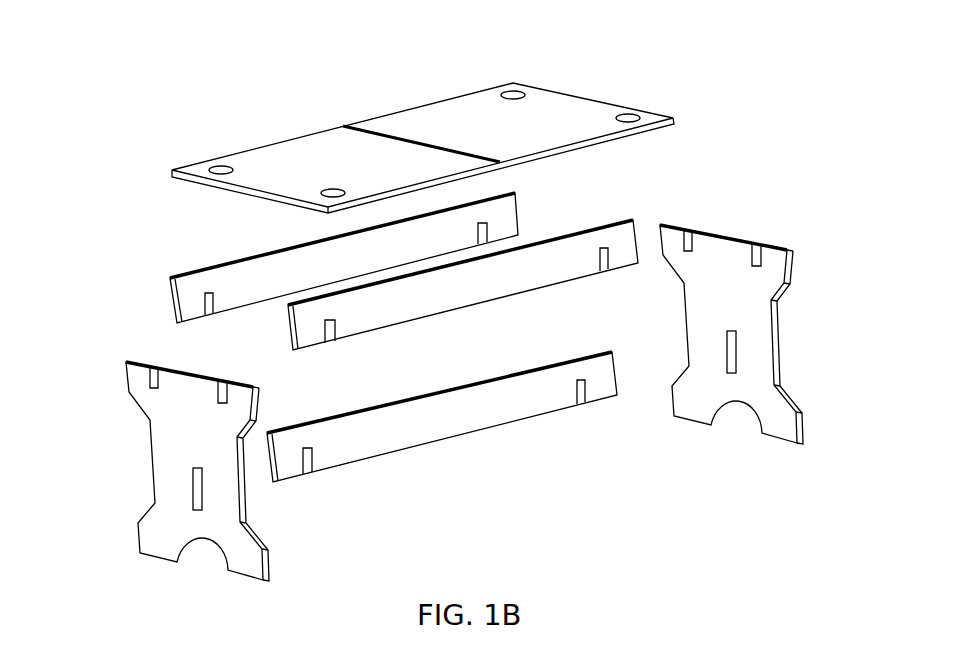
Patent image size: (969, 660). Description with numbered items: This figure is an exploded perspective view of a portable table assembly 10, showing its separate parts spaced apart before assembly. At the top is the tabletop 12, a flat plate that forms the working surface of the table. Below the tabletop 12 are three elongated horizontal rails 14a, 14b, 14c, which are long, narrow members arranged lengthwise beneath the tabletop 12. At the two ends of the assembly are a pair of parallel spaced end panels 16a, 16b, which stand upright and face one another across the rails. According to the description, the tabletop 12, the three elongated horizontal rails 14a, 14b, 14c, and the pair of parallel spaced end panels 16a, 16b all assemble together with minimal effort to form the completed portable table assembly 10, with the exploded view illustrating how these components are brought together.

The portable table assembly 10 is at (136, 125).
The tabletop 12 is at (583, 97).
The elongated horizontal rail 14a is at (190, 275).
The elongated horizontal rail 14b is at (603, 227).
The elongated horizontal rail 14c is at (444, 438).
The end panel 16a is at (150, 437).
The end panel 16b is at (782, 320).